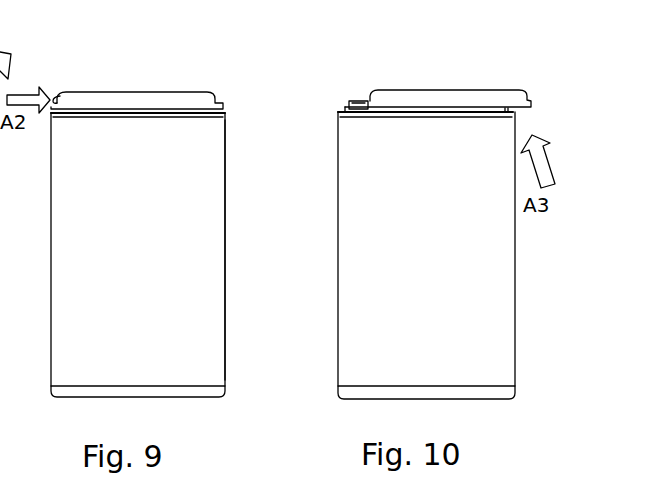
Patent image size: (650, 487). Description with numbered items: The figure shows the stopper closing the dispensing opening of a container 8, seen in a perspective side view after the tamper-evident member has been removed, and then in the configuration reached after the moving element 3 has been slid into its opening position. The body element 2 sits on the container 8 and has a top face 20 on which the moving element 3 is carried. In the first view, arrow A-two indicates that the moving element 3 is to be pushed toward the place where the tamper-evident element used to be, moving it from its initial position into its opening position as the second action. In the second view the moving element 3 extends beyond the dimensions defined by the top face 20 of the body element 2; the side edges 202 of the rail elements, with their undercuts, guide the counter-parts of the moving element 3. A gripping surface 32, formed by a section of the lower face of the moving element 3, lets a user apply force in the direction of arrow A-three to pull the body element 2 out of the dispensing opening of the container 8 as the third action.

In FIG. 9, the body element 2 is at (70, 118).
In FIG. 10, the body element 2 is at (352, 118).
In FIG. 9, the moving element 3 is at (118, 107).
In FIG. 10, the moving element 3 is at (442, 104).
In FIG. 9, the container 8 is at (190, 330).
In FIG. 10, the top face 20 is at (343, 106).
In FIG. 10, the side edges 202 is at (356, 101).
In FIG. 10, the gripping surface 32 is at (531, 130).